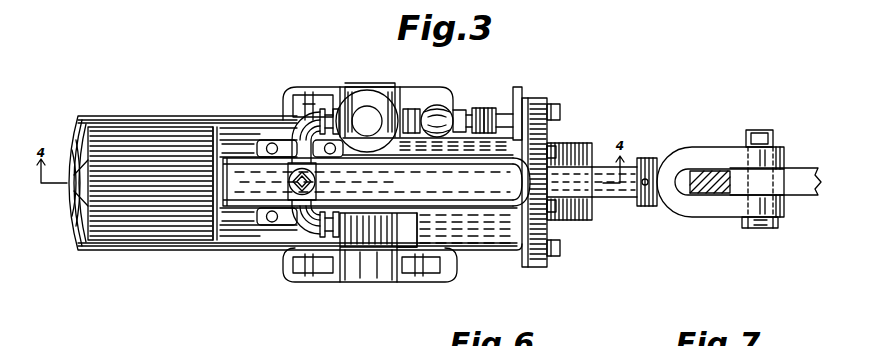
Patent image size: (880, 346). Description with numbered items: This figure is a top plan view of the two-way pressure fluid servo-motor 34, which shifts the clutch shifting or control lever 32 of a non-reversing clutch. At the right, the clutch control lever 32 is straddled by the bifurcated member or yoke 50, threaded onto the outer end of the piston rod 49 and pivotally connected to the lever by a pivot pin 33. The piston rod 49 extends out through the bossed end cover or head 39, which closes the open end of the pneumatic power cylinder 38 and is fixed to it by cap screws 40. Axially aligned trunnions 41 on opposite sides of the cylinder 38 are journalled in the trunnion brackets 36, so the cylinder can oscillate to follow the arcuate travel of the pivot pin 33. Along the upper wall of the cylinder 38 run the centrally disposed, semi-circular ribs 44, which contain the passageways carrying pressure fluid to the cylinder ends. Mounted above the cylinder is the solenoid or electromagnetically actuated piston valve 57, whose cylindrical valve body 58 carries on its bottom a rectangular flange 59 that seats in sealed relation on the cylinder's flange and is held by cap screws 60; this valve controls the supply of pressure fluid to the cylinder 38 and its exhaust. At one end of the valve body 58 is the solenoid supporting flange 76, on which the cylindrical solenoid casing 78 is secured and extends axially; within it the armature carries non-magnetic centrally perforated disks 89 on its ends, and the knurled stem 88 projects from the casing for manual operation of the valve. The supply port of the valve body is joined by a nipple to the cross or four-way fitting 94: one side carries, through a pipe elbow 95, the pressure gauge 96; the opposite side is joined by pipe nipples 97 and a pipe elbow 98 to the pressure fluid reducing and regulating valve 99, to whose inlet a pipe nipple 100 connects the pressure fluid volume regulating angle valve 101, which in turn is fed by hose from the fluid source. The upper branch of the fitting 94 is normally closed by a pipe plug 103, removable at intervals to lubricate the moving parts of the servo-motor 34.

The clutch shifting or control lever 32 is at (800, 180).
The pivot pin 33 is at (758, 228).
The two-way pressure fluid servo-motor 34 is at (567, 90).
The trunnion brackets 36 is at (440, 95).
The pneumatic power cylinder 38 is at (172, 252).
The bossed end cover or head 39 is at (540, 268).
The cap screws 40 is at (560, 112).
The trunnions 41 is at (362, 86).
The ribs 44 is at (68, 210).
The piston rod 49 is at (594, 163).
The bifurcated member or yoke 50 is at (690, 148).
The solenoid or electromagnetically actuated piston valve 57 is at (238, 150).
The cylindrical valve body 58 is at (220, 215).
The rectangular flange 59 is at (250, 145).
The cap screws 60 is at (272, 142).
The solenoid supporting flange 76 is at (222, 250).
The cylindrical solenoid casing 78 is at (132, 220).
The knurled stem 88 is at (68, 198).
The centrally perforated disks 89 is at (403, 182).
The cross or four-way fitting 94 is at (288, 200).
The pipe elbow 95 is at (307, 233).
The pressure gauge 96 is at (405, 250).
The pipe nipples 97 is at (328, 112).
The pipe elbow 98 is at (297, 118).
The pressure fluid reducing and regulating valve 99 is at (377, 103).
The pipe nipple 100 is at (403, 118).
The pressure fluid volume regulating angle valve 101 is at (467, 112).
The pipe plug 103 is at (289, 183).